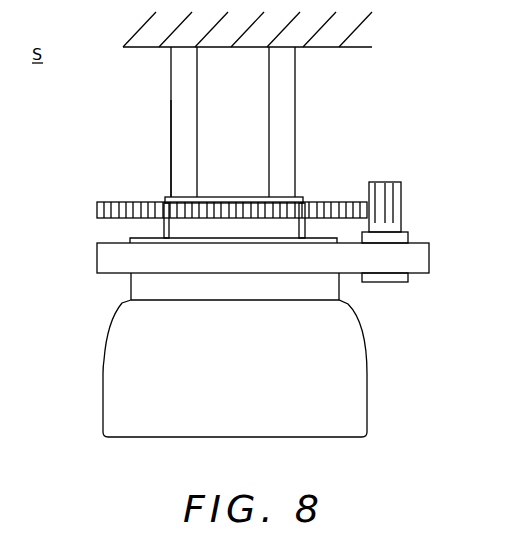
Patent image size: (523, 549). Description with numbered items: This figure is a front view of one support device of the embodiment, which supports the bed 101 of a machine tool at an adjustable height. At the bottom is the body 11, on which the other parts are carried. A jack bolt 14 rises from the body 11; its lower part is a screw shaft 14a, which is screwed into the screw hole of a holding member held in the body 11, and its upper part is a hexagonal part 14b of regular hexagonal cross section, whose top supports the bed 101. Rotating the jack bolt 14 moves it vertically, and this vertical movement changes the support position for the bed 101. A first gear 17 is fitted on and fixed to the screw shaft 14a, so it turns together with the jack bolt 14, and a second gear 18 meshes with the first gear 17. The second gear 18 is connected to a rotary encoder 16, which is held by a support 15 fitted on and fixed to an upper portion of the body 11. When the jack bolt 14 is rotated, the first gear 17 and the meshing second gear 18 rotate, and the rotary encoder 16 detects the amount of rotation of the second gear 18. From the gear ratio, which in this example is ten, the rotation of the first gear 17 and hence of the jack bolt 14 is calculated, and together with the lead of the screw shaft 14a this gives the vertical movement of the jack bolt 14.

The bed 101 is at (370, 31).
The jack bolt 14 is at (297, 132).
The screw shaft 14a is at (164, 233).
The hexagonal part 14b is at (171, 143).
The first gear 17 is at (97, 203).
The second gear 18 is at (401, 213).
The support 15 is at (429, 253).
The rotary encoder 16 is at (395, 282).
The body 11 is at (367, 385).